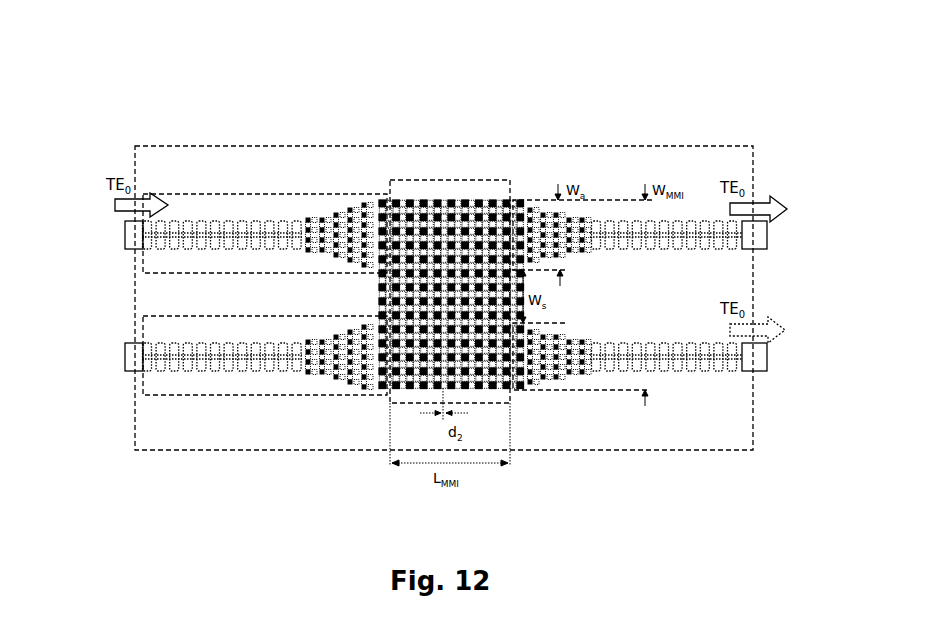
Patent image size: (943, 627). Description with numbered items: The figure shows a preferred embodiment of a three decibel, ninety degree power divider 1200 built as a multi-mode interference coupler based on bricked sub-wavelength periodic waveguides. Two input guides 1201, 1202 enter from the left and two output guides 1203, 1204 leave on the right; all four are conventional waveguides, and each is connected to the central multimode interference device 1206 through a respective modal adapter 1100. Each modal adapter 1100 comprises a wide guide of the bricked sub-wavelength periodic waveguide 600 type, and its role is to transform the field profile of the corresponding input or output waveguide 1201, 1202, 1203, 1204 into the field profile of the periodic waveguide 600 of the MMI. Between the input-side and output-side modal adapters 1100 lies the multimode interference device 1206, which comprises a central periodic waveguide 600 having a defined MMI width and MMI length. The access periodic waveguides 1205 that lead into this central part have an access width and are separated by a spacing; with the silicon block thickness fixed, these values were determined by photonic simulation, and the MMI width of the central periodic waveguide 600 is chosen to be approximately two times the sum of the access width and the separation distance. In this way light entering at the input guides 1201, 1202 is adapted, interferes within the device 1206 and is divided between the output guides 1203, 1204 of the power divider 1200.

The bricked sub-wavelength periodic waveguide 600 is at (511, 183).
The modal adapter 1100 is at (260, 194).
The 3 dB/90° power divider 1200 is at (428, 146).
The first input guide 1201 is at (128, 233).
The second input guide 1202 is at (127, 353).
The first output guide 1203 is at (760, 232).
The second output guide 1204 is at (762, 362).
The access periodic waveguide 1205 is at (355, 208).
The multimode interference device 1206 is at (467, 203).